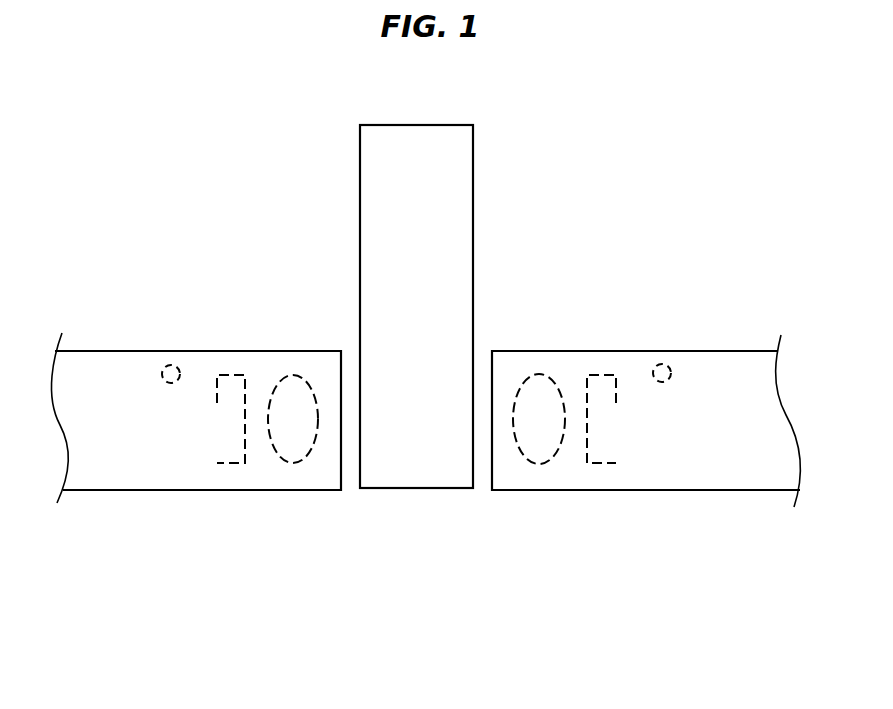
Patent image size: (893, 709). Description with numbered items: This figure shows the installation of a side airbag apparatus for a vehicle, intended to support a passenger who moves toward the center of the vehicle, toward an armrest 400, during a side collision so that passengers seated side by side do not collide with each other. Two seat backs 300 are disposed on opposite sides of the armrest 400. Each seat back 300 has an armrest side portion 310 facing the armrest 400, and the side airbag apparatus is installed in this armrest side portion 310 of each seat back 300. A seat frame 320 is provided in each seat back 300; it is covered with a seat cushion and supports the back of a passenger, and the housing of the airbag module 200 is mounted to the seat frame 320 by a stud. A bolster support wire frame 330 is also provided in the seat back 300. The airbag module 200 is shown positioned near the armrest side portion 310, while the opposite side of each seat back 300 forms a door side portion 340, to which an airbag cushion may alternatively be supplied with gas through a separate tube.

The airbag module 200 is at (293, 375).
The seat back 300 is at (424, 441).
The armrest side portion 310 is at (305, 478).
The seat frame 320 is at (222, 377).
The bolster support wire frame 330 is at (163, 365).
The door side portion 340 is at (113, 470).
The armrest 400 is at (423, 478).